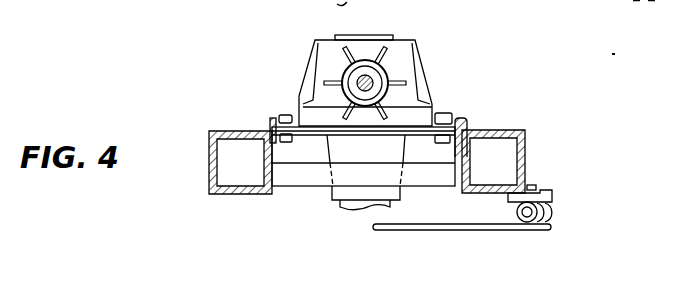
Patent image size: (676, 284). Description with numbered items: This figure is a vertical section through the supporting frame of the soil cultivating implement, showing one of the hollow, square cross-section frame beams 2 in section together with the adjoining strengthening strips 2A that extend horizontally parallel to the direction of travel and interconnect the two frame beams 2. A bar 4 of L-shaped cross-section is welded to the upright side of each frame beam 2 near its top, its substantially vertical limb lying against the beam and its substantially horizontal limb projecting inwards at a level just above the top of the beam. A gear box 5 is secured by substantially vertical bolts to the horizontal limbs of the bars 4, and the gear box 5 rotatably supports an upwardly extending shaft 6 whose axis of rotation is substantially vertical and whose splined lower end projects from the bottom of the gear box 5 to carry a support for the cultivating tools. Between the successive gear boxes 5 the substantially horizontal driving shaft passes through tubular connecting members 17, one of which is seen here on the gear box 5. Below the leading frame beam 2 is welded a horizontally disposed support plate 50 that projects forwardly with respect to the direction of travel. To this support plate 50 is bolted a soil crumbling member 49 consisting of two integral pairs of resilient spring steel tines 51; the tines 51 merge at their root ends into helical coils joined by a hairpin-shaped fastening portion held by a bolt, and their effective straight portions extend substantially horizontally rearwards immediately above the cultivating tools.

The frame beam 2 is at (209, 137).
The strengthening strip 2A is at (293, 187).
The bar of L-shaped cross-section 4 is at (272, 120).
The gear box 5 is at (416, 58).
The shaft 6 is at (346, 207).
The tubular connecting member 17 is at (368, 60).
The soil crumbling member 49 is at (557, 218).
The support plate 50 is at (551, 196).
The tine 51 is at (446, 230).